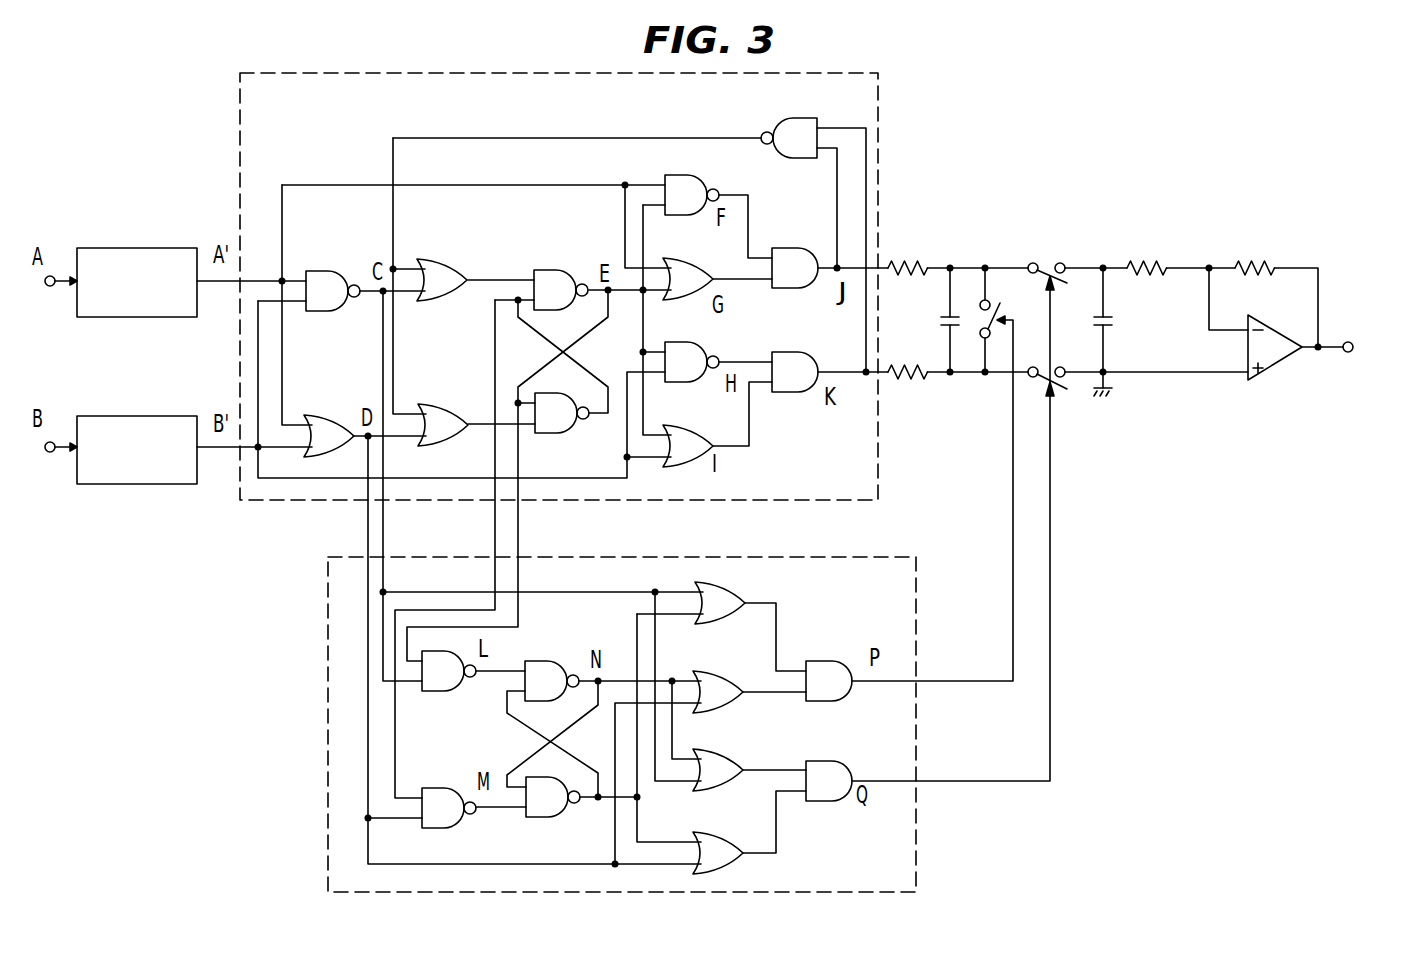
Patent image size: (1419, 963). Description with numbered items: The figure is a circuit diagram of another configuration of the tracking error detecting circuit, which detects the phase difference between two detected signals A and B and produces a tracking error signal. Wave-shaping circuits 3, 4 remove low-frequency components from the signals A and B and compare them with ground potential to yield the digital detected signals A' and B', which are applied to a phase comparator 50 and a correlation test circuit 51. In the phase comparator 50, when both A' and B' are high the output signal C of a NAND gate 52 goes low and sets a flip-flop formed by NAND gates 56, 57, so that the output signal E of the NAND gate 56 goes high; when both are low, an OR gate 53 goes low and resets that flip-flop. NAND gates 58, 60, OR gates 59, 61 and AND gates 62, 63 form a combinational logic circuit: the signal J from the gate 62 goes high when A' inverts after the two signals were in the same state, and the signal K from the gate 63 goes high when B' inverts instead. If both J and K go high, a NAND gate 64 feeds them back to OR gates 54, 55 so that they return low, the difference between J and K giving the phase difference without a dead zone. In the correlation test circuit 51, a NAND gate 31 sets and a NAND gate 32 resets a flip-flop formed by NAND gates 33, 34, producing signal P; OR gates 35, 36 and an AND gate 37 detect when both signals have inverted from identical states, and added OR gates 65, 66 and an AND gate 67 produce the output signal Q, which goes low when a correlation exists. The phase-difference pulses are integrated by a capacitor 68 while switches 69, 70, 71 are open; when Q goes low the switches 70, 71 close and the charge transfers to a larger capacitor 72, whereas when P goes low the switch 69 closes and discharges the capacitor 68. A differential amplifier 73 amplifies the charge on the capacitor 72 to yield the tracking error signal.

The wave-shaping circuit 3 is at (140, 248).
The wave-shaping circuit 4 is at (151, 416).
The NAND gate 31 is at (455, 692).
The NAND gate 32 is at (462, 828).
The NAND gate 33 is at (541, 662).
The NAND gate 34 is at (564, 817).
The OR gate 35 is at (725, 584).
The OR gate 36 is at (714, 680).
The AND gate 37 is at (818, 661).
The phase comparator 50 is at (878, 116).
The correlation test circuit 51 is at (916, 832).
The NAND gate 52 is at (319, 271).
The OR gate 53 is at (313, 420).
The OR gate 54 is at (419, 261).
The OR gate 55 is at (431, 406).
The NAND gate 56 is at (545, 270).
The NAND gate 57 is at (574, 432).
The NAND gate 58 is at (668, 176).
The OR gate 59 is at (676, 260).
The NAND gate 60 is at (680, 342).
The OR gate 61 is at (698, 430).
The AND gate 62 is at (780, 248).
The AND gate 63 is at (802, 352).
The NAND gate 64 is at (796, 118).
The OR gate 65 is at (716, 757).
The OR gate 66 is at (716, 843).
The AND gate 67 is at (818, 761).
The capacitor 68 is at (941, 321).
The switch 69 is at (990, 295).
The switch 70 is at (1046, 262).
The switch 71 is at (1070, 389).
The capacitor 72 is at (1113, 321).
The differential amplifier 73 is at (1274, 355).